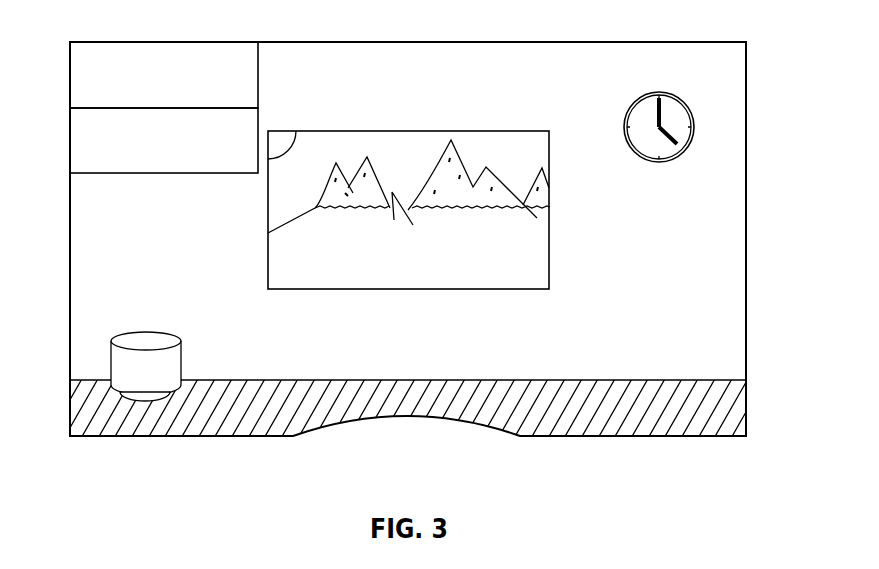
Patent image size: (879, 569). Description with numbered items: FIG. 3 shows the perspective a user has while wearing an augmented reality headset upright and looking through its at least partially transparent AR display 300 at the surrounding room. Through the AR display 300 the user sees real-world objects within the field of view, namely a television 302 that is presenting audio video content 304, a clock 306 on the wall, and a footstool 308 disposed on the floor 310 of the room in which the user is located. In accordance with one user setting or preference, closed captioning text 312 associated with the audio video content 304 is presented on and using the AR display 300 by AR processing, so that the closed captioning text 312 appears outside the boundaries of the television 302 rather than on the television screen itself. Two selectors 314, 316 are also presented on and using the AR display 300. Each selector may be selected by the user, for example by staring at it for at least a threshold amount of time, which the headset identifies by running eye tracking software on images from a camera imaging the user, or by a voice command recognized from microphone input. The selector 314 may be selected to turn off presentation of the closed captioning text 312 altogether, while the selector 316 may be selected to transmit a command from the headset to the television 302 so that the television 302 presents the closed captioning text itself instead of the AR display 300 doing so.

The AR display 300 is at (753, 59).
The television 302 is at (513, 131).
The audio video content 304 is at (338, 154).
The clock 306 is at (675, 157).
The footstool 308 is at (157, 330).
The floor 310 is at (88, 419).
The closed captioning text 312 is at (569, 312).
The selector 314 is at (72, 78).
The selector 316 is at (72, 143).